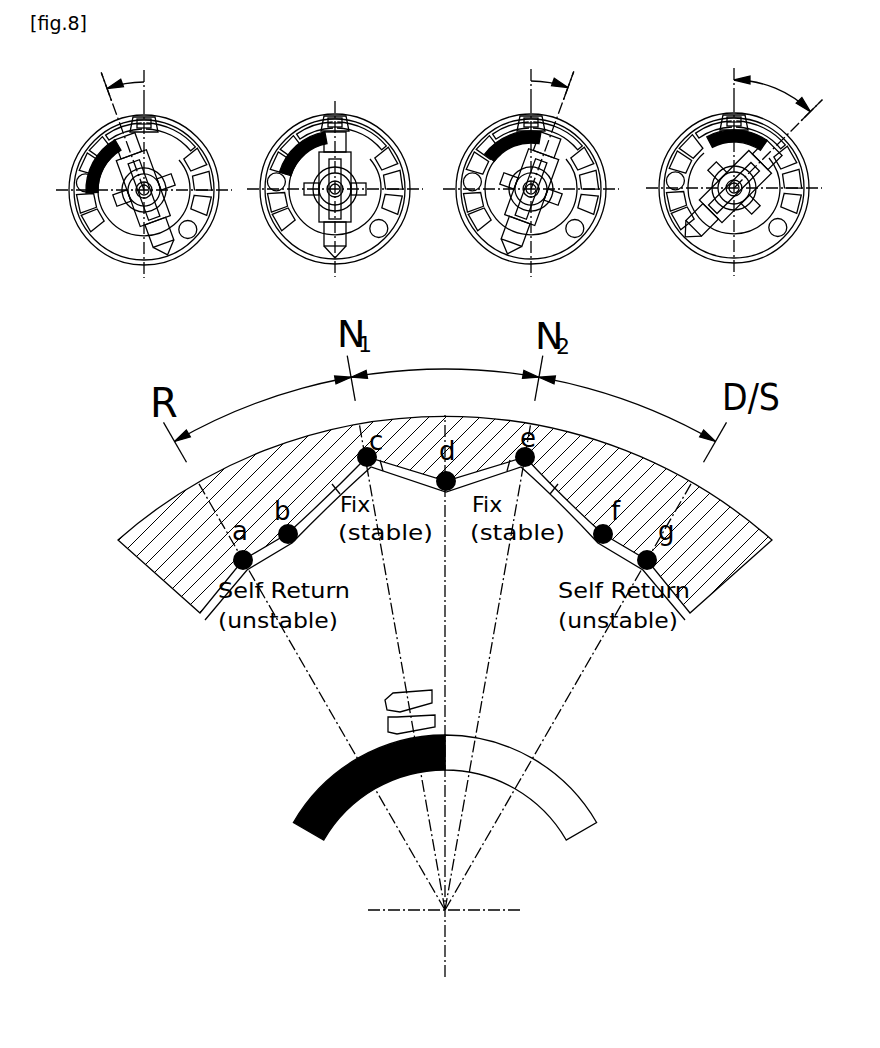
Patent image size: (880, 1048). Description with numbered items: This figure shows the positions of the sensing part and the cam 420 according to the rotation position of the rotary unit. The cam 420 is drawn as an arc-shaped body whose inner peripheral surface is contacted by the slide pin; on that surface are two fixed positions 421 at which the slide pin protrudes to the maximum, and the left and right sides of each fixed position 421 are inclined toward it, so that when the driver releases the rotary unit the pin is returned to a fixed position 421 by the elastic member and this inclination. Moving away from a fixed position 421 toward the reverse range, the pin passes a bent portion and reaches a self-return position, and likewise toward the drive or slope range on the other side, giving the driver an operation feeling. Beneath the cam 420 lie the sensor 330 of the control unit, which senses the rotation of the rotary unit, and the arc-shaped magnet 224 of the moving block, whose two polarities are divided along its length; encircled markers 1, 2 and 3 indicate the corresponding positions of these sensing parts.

The cam 420 is at (143, 537).
The fixed position 421 is at (362, 450).
The sensor 330 is at (393, 716).
The magnet 224 is at (585, 812).
The neutral position 1 is at (448, 707).
The reverse position 2 is at (364, 762).
The drive position 3 is at (545, 740).